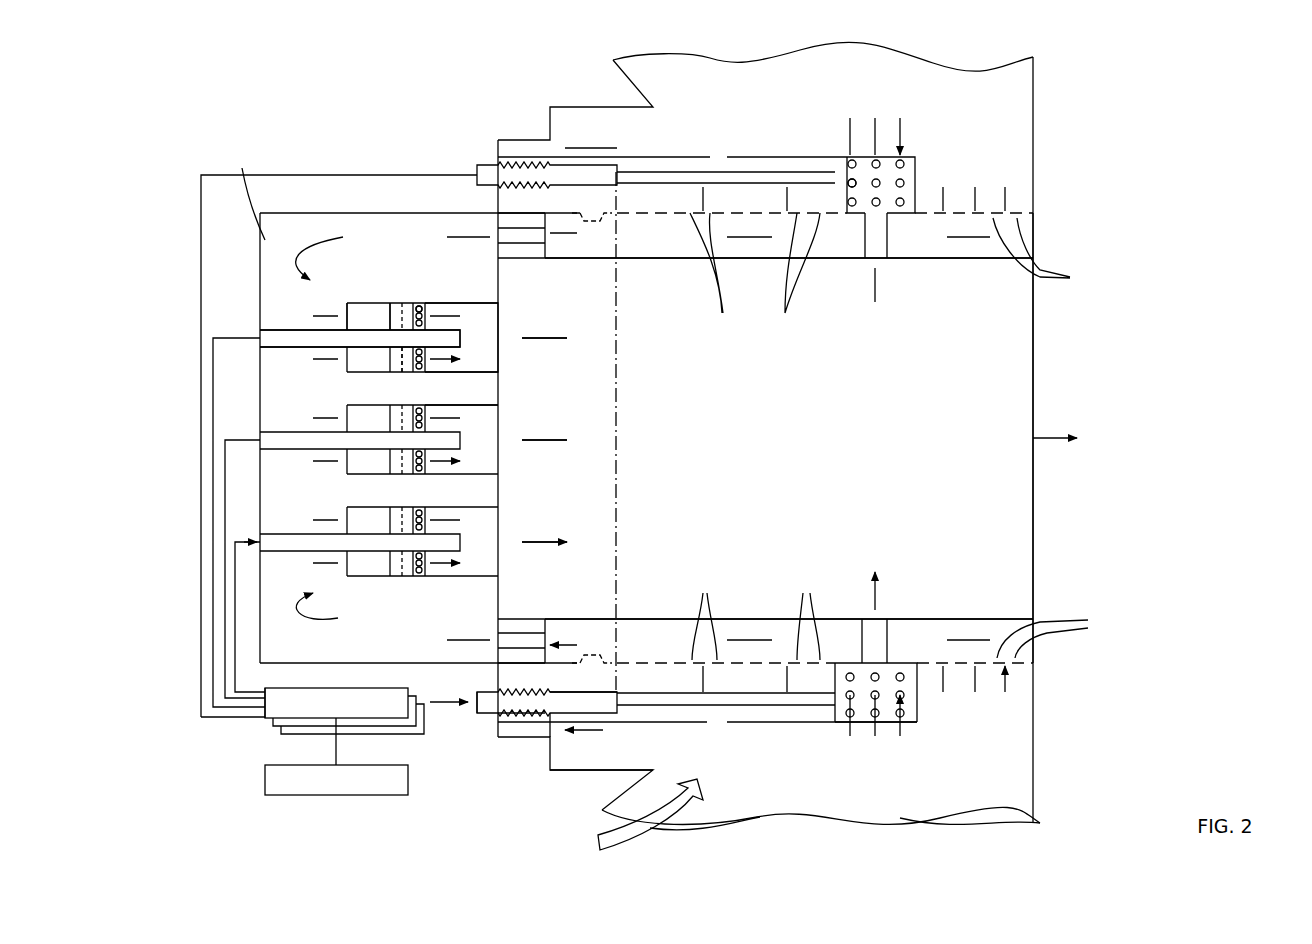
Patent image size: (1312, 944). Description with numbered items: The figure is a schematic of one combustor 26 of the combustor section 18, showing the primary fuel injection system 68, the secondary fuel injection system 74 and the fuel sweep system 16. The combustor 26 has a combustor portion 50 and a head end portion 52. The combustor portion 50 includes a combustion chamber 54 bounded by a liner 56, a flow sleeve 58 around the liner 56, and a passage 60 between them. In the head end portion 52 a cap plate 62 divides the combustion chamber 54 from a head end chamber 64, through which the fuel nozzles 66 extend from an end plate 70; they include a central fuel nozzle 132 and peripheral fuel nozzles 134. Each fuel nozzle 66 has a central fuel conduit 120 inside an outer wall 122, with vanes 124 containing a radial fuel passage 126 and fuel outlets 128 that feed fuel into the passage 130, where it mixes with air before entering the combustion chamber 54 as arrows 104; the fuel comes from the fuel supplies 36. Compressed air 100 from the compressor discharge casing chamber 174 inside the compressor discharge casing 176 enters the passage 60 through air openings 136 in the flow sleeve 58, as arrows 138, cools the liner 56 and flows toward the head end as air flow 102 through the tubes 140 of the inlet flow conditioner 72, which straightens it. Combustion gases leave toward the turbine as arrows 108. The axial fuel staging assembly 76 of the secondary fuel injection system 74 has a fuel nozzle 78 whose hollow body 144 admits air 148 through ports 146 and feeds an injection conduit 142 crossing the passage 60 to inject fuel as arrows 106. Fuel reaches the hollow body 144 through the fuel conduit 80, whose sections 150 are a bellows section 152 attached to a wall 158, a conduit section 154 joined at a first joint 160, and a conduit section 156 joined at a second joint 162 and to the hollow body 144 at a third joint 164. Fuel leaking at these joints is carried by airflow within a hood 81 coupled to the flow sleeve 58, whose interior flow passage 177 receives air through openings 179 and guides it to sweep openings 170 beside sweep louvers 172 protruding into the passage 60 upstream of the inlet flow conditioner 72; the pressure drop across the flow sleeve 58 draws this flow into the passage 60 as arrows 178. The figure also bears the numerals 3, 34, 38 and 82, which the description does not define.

The section line of FIG. 3 is at (591, 437).
The fuel sweep system 16 is at (590, 637).
The combustor section 18 is at (1072, 100).
The combustor 26 is at (1065, 140).
The fuel system 34 is at (257, 740).
The fuel supply 36 is at (305, 688).
The controller 38 is at (332, 797).
The combustor portion 50 is at (1053, 660).
The head end portion 52 is at (303, 208).
The combustion chamber 54 is at (906, 457).
The combustor liner 56 is at (1003, 260).
The flow sleeve 58 is at (1035, 213).
The passage 60 is at (1035, 238).
The cap plate 62 is at (500, 388).
The head end chamber 64 is at (413, 620).
The fuel nozzle 66 is at (400, 282).
The primary fuel injection system 68 is at (363, 203).
The end plate 70 is at (260, 282).
The inlet flow conditioner 72 is at (477, 202).
The secondary fuel injection system 74 is at (812, 797).
The axial fuel staging assembly 76 is at (925, 775).
The fuel nozzle 78 is at (917, 730).
The fuel conduit 80 is at (685, 712).
The hood 81 is at (662, 723).
The fuel line 82 is at (238, 337).
The compressed air flow 100 is at (631, 850).
The air flow 102 is at (985, 636).
The fuel and air output 104 is at (540, 542).
The secondary fuel injection flow 106 is at (873, 608).
The hot combustion gases flow 108 is at (1048, 442).
The central fuel conduit 120 is at (263, 347).
The outer wall 122 is at (463, 303).
The vanes 124 is at (395, 372).
The radial fuel passage 126 is at (387, 317).
The fuel outlets 128 is at (418, 307).
The flow passage 130 is at (363, 315).
The central fuel nozzle 132 is at (498, 455).
The outer fuel nozzles 134 is at (500, 522).
The air openings 136 is at (907, 436).
The incoming air flow 138 is at (785, 187).
The tubes 140 is at (534, 240).
The injection conduit 142 is at (860, 237).
The hollow body 144 is at (917, 173).
The air ports 146 is at (846, 182).
The air flow into hollow body 148 is at (875, 118).
The sections 150 is at (595, 752).
The bellows section 152 is at (517, 720).
The conduit section 154 is at (590, 717).
The conduit section 156 is at (762, 710).
The wall 158 is at (498, 727).
The first joint 160 is at (547, 705).
The second joint 162 is at (617, 668).
The third joint 164 is at (850, 668).
The sweep openings 170 is at (600, 207).
The sweep louvers 172 is at (600, 220).
The compressor discharge casing chamber 174 is at (740, 800).
The compressor discharge casing 176 is at (603, 768).
The interior flow passage 177 is at (663, 162).
The sweep flow 178 is at (600, 280).
The hood openings 179 is at (717, 153).